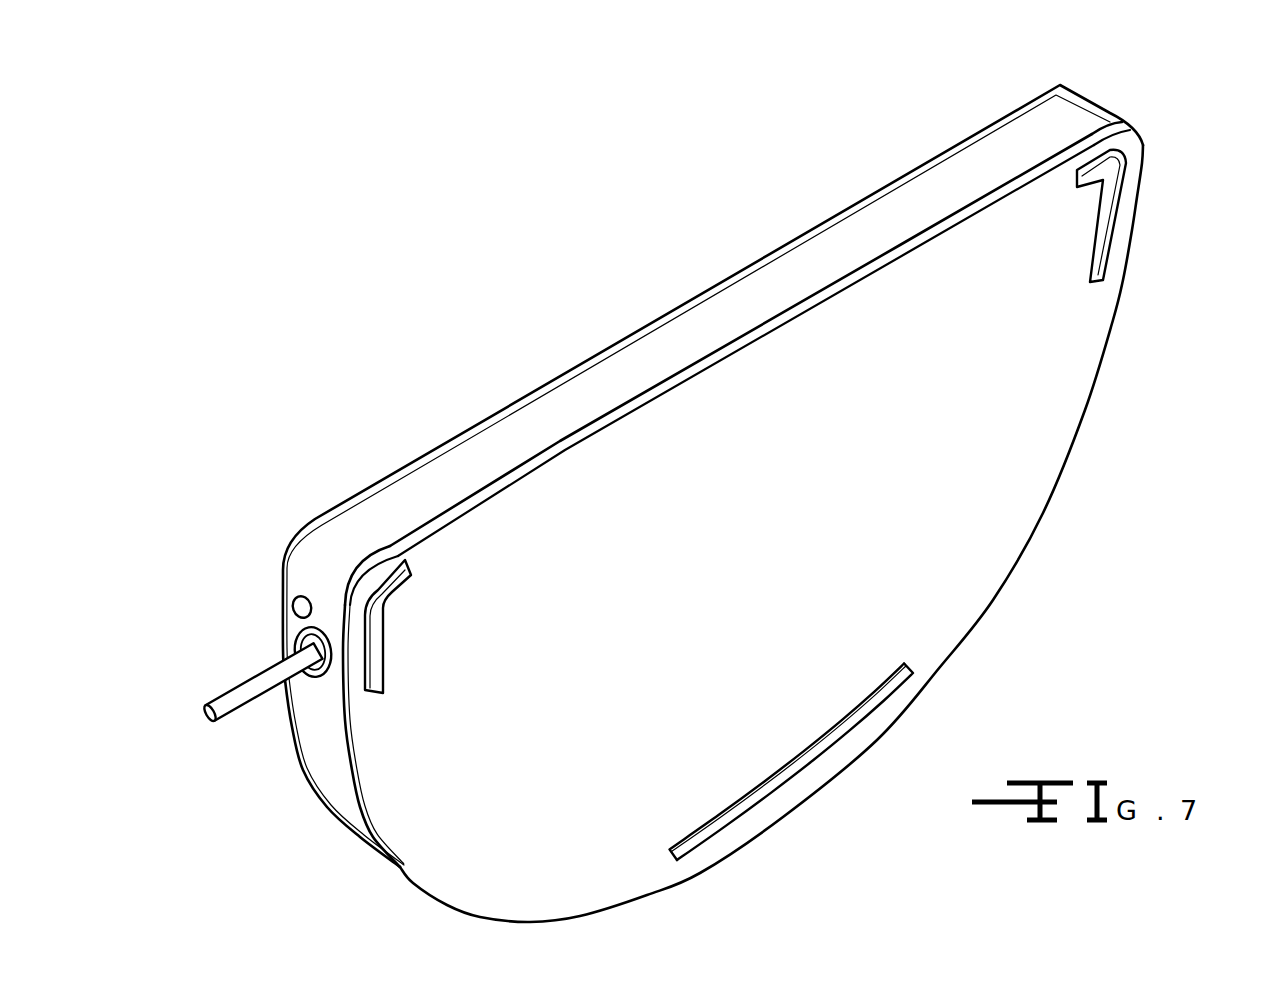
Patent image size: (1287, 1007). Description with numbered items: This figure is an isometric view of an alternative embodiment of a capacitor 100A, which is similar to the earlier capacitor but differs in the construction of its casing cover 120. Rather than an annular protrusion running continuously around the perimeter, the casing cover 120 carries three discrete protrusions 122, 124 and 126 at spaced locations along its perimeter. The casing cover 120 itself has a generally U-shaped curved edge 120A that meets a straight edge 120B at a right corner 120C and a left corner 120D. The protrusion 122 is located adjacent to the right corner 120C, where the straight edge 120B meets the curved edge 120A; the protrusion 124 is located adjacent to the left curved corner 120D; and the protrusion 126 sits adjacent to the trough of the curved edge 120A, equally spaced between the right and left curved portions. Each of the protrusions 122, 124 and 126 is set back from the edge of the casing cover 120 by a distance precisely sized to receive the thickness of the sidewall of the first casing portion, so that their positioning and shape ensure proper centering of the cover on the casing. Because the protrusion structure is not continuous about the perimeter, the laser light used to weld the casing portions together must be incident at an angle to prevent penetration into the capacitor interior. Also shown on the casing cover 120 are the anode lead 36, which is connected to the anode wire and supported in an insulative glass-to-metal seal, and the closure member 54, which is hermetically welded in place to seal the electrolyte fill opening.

The capacitor 100A is at (792, 207).
The casing cover 120 is at (1018, 368).
The curved edge 120A is at (1013, 558).
The straight edge 120B is at (757, 335).
The right corner 120C is at (1145, 135).
The left corner 120D is at (353, 573).
The protrusion 122 is at (1103, 237).
The protrusion 124 is at (383, 633).
The protrusion 126 is at (810, 765).
The closure member 54 is at (292, 607).
The anode lead 36 is at (247, 707).